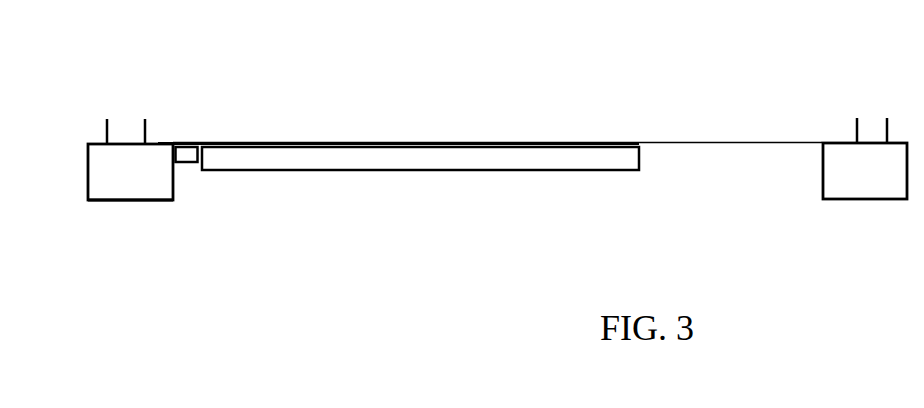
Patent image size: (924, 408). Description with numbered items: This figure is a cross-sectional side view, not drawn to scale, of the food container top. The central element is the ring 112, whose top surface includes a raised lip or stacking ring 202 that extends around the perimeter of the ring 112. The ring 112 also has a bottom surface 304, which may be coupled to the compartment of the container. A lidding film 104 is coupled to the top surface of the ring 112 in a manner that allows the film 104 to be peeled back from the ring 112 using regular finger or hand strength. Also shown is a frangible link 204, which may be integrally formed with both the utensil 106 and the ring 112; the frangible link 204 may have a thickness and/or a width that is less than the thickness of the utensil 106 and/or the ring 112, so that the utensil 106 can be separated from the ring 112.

The lidding film 104 is at (490, 91).
The utensil 106 is at (420, 210).
The ring 112 is at (498, 223).
The stacking ring 202 is at (456, 80).
The frangible link 204 is at (218, 207).
The bottom surface 304 is at (154, 253).